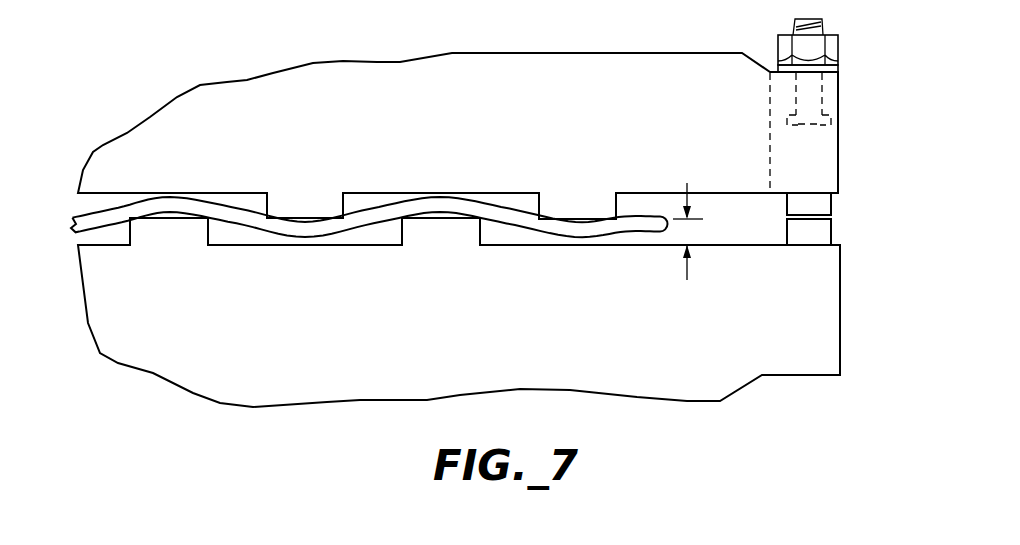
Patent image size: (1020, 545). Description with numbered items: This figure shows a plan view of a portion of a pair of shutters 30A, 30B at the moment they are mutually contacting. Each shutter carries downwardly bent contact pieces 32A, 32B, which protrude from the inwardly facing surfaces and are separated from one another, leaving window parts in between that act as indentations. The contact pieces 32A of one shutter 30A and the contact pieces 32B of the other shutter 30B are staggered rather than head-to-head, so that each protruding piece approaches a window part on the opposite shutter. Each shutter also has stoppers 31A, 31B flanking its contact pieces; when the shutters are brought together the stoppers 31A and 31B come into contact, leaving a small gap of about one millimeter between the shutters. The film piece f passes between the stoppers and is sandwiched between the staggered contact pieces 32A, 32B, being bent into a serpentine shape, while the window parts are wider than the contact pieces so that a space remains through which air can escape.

The shutter 30A is at (663, 72).
The shutter 30B is at (579, 378).
The stopper 31A is at (827, 197).
The stopper 31B is at (827, 232).
The contact piece 32A is at (296, 200).
The contact piece 32B is at (163, 232).
The film piece f is at (593, 230).